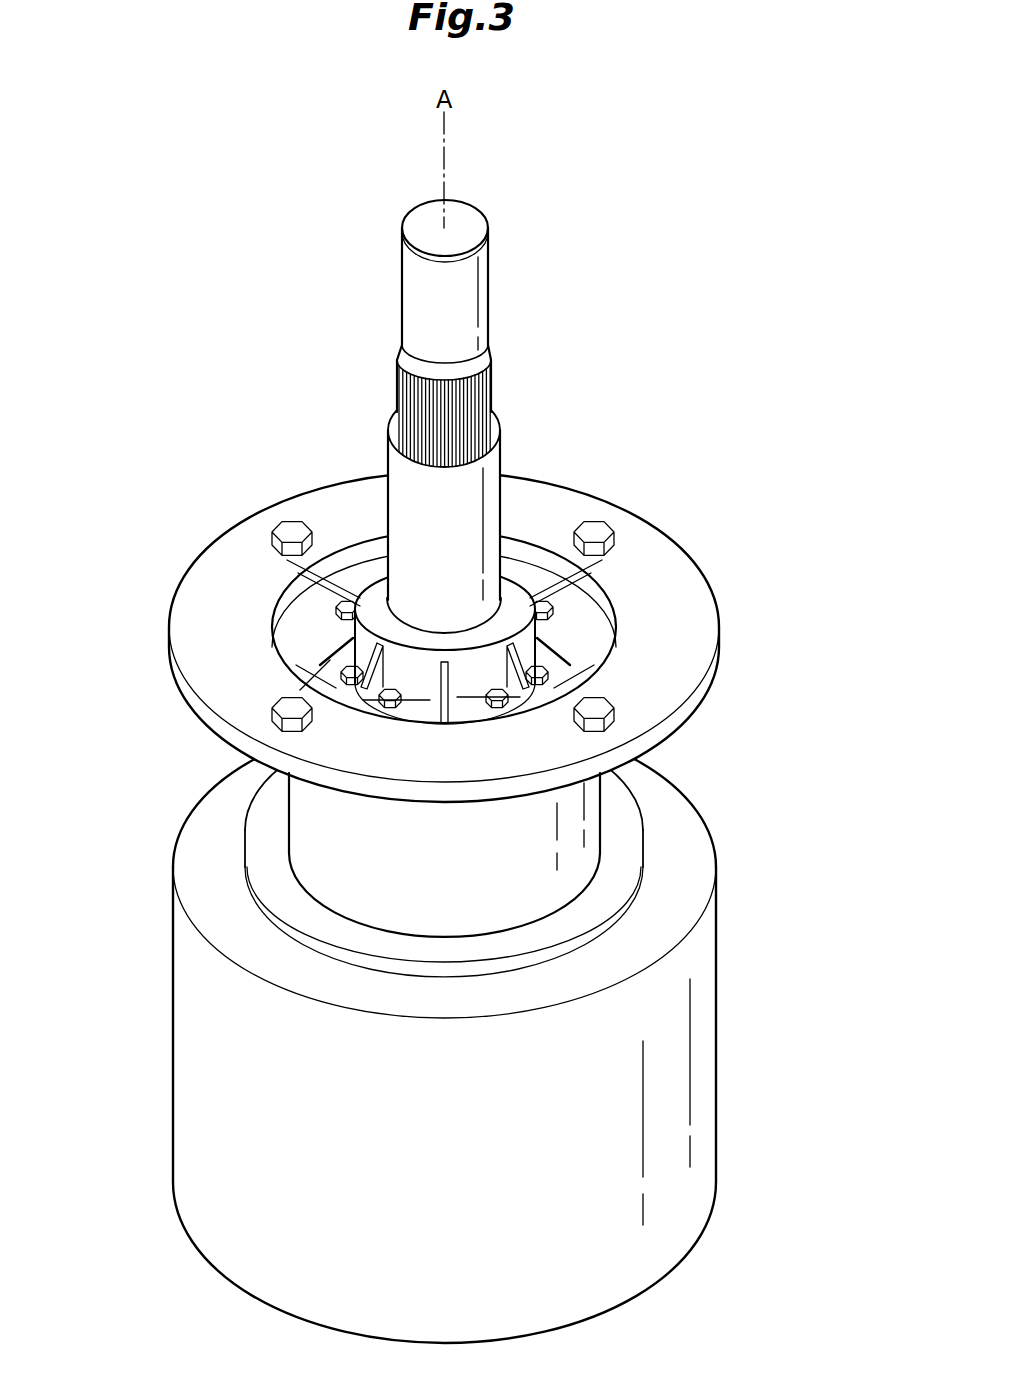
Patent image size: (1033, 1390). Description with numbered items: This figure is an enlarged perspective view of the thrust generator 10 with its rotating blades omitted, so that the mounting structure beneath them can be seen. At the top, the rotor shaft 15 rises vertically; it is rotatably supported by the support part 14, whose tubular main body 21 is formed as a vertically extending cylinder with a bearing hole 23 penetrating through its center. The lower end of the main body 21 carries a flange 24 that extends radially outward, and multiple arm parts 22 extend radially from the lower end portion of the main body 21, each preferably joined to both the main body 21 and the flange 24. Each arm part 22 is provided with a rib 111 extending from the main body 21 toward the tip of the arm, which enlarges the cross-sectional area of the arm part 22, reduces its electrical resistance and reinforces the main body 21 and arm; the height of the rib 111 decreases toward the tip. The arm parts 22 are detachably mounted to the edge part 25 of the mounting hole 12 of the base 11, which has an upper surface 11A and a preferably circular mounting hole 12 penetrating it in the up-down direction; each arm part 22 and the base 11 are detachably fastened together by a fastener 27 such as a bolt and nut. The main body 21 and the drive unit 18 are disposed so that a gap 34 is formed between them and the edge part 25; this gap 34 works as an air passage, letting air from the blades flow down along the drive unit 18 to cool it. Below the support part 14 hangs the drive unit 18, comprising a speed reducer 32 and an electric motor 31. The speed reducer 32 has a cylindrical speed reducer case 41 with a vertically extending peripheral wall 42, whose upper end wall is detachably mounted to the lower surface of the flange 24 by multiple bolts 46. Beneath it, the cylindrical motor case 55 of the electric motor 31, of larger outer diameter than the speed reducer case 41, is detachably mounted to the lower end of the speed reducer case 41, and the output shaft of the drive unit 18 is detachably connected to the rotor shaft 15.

The thrust generator 10 is at (633, 192).
The base 11 is at (658, 522).
The upper surface 11A is at (686, 583).
The mounting hole 12 is at (372, 560).
The support part 14 is at (540, 570).
The rotor shaft 15 is at (410, 270).
The drive unit 18 is at (717, 805).
The main body 21 is at (298, 615).
The arm parts 22 is at (322, 690).
The bearing hole 23 is at (420, 627).
The flange 24 is at (330, 653).
The edge part 25 is at (618, 652).
The fastener 27 is at (280, 700).
The electric motor 31 is at (720, 1007).
The speed reducer 32 is at (288, 802).
The gap 34 is at (320, 607).
The speed reducer case 41 is at (594, 797).
The peripheral wall 42 is at (313, 818).
The bolts 46 is at (398, 702).
The motor case 55 is at (185, 1030).
The rib 111 is at (560, 675).